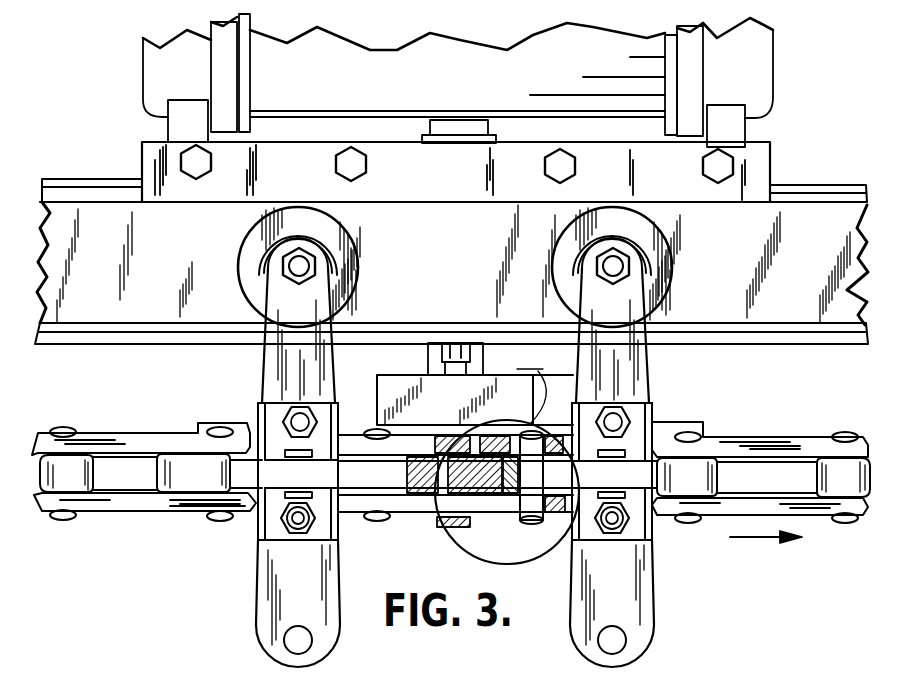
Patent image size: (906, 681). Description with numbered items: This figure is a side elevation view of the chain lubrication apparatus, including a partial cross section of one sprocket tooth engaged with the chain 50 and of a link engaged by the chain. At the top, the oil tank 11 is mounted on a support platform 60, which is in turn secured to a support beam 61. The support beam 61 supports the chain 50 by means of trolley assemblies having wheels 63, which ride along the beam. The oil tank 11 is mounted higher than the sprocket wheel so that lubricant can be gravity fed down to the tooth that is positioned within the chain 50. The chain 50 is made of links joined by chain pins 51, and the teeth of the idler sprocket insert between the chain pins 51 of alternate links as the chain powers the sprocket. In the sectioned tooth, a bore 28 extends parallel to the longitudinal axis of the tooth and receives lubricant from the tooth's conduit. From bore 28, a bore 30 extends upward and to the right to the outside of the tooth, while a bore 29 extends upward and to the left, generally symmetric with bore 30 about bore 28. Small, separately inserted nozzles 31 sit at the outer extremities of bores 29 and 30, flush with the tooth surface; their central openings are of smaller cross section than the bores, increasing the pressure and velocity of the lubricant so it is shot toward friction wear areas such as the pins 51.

The oil tank 11 is at (775, 73).
The support platform 60 is at (772, 165).
The support beam 61 is at (470, 280).
The wheels 63 is at (359, 262).
The chain 50 is at (178, 503).
The chain pins 51 is at (63, 521).
The bore 28 is at (450, 458).
The bore 29 is at (433, 463).
The bore 30 is at (464, 470).
The nozzles 31 is at (455, 468).